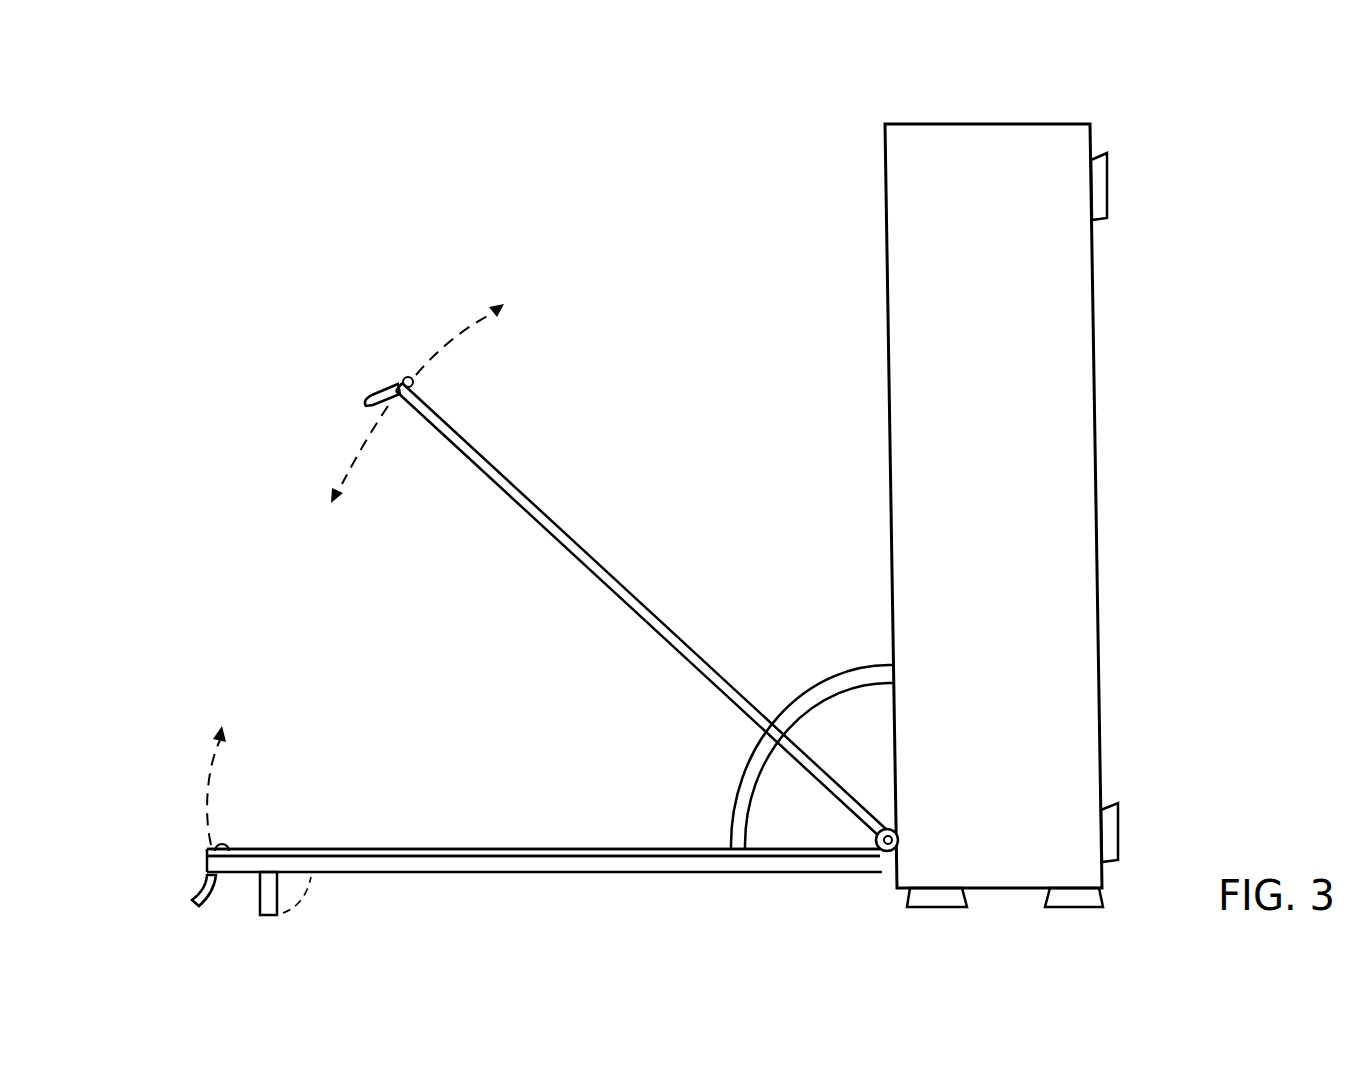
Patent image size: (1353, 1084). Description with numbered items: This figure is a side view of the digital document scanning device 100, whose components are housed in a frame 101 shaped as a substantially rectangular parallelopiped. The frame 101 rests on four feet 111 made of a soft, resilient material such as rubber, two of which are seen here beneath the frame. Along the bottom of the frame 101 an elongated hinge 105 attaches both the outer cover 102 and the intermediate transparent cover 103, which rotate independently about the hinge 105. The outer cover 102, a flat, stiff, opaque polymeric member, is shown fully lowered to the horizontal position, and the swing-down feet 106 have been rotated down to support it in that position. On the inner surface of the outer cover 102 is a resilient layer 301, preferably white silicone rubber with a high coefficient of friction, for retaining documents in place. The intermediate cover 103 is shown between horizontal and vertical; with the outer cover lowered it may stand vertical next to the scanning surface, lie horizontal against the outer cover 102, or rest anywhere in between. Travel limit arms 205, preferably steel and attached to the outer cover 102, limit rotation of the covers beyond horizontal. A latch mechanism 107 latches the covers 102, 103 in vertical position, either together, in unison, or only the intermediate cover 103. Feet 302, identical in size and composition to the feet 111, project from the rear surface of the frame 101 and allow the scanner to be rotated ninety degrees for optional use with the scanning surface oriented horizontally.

The digital document scanning device 100 is at (494, 188).
The frame 101 is at (948, 124).
The outer cover 102 is at (550, 873).
The intermediate transparent cover 103 is at (553, 518).
The elongated hinge 105 is at (890, 853).
The swing-down feet 106 is at (268, 916).
The latch mechanism 107 is at (200, 890).
The feet 111 is at (930, 908).
The travel limit arms 205 is at (817, 682).
The resilient layer 301 is at (462, 848).
The feet 302 is at (1108, 208).